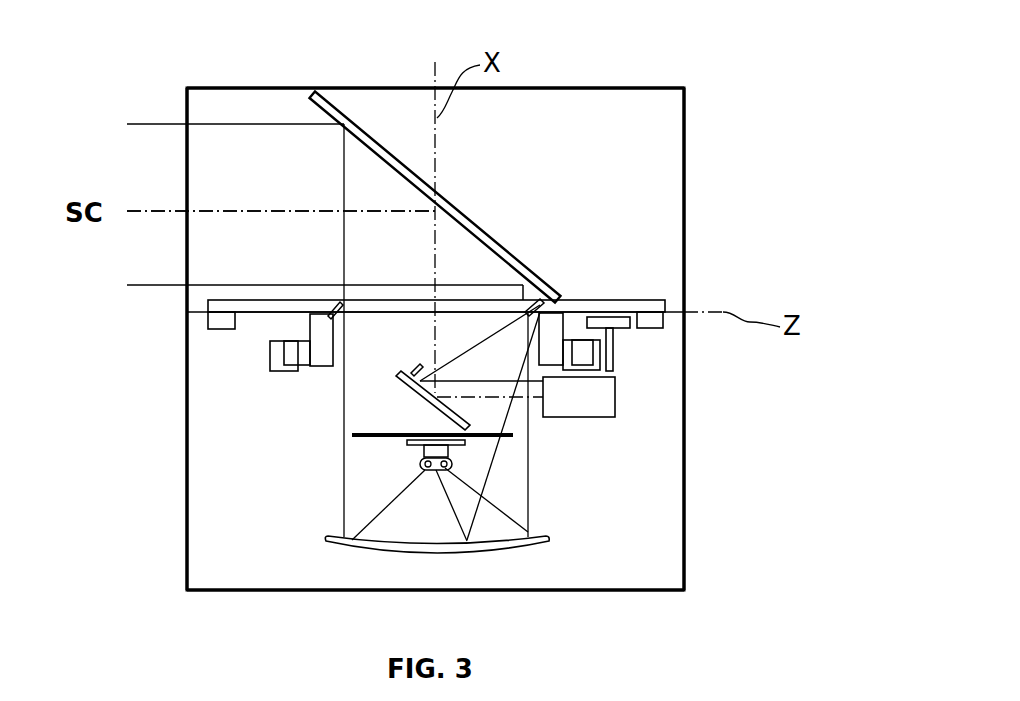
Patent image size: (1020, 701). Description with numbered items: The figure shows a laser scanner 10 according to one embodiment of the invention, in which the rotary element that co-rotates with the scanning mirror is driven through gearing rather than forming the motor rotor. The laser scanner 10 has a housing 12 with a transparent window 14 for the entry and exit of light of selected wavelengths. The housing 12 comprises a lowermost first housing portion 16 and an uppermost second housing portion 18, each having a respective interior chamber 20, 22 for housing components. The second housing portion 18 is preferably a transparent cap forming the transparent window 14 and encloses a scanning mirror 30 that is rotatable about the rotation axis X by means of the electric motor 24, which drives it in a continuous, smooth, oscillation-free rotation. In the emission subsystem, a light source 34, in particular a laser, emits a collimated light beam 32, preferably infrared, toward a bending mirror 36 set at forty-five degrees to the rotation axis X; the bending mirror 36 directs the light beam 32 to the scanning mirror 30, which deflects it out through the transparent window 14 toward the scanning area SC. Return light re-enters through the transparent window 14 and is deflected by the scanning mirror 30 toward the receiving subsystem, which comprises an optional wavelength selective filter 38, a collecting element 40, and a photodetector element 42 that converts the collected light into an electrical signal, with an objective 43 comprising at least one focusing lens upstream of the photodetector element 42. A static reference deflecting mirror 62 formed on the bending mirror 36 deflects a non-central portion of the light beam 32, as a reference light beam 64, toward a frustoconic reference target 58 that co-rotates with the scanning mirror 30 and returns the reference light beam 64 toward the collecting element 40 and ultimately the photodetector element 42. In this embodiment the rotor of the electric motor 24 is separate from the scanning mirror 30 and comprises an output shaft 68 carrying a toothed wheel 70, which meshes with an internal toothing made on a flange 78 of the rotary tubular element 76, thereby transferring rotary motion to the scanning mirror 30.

The laser scanner 10 is at (146, 100).
The housing 12 is at (712, 288).
The transparent window 14 is at (685, 182).
The first housing portion 16 is at (687, 527).
The second housing portion 18 is at (624, 80).
The interior chamber 20 is at (668, 571).
The interior chamber 22 is at (667, 128).
The electric motor 24 is at (645, 377).
The scanning mirror 30 is at (484, 224).
The light beam 32 is at (258, 211).
The light source 34 is at (593, 400).
The bending mirror 36 is at (418, 388).
The filter 38 is at (516, 440).
The collecting element 40 is at (330, 545).
The photodetector element 42 is at (408, 443).
The objective 43 is at (436, 472).
The reference target 58 is at (545, 300).
The static reference deflecting mirror 62 is at (422, 373).
The reference light beam 64 is at (446, 368).
The output shaft 68 is at (613, 357).
The toothed wheel 70 is at (610, 322).
The rotary tubular element 76 is at (320, 356).
The flange 78 is at (634, 303).